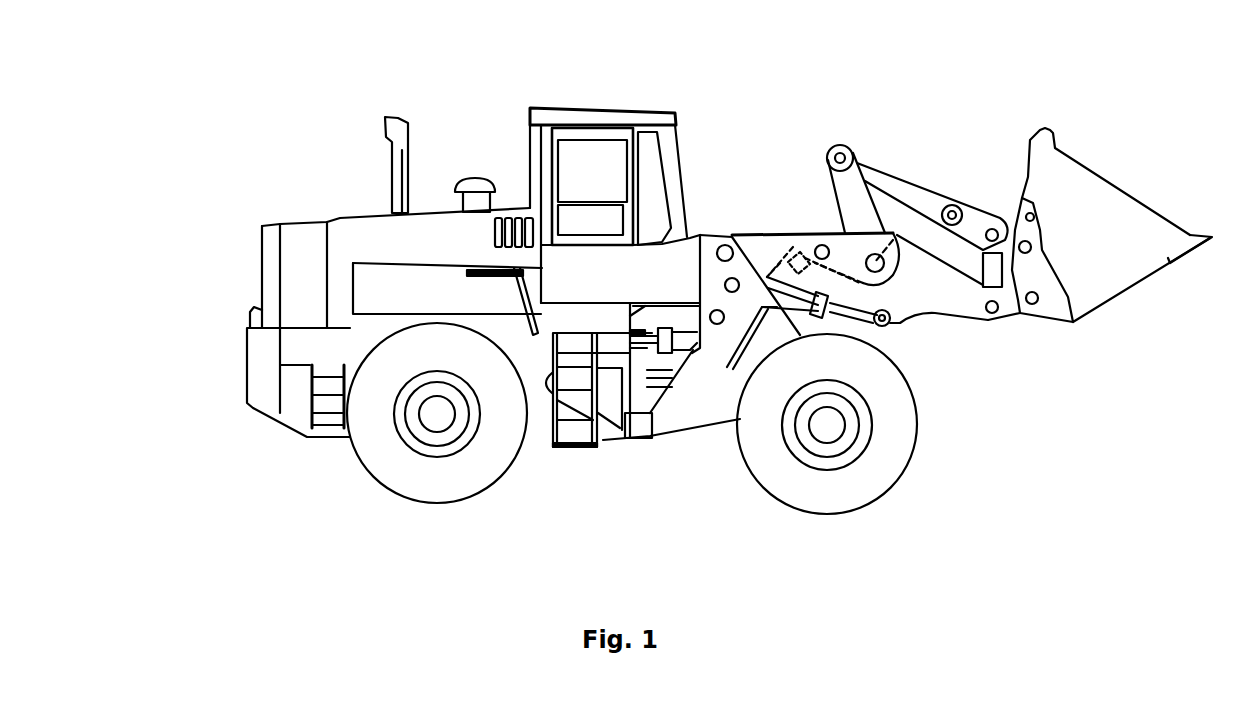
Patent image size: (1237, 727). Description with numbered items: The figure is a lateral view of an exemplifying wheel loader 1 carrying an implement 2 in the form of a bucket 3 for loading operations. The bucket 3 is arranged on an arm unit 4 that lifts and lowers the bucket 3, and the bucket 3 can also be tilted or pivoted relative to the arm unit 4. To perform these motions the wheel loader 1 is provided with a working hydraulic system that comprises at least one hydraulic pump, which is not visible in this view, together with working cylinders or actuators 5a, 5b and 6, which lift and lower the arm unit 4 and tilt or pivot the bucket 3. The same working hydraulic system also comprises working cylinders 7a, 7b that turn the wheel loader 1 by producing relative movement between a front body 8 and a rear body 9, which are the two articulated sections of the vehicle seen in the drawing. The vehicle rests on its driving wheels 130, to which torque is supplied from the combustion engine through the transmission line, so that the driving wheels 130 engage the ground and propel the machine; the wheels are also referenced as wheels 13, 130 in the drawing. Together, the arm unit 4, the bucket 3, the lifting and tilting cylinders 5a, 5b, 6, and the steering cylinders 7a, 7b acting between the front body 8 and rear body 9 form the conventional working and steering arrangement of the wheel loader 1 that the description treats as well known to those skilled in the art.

The wheel loader 1 is at (343, 71).
The implement 2 is at (983, 177).
The bucket 3 is at (1103, 262).
The arm unit 4 is at (972, 315).
The working cylinder 5a is at (868, 353).
The working cylinder 5b is at (852, 317).
The working cylinder 6 is at (790, 262).
The working cylinder 7a is at (792, 385).
The working cylinder 7b is at (700, 346).
The front body 8 is at (668, 430).
The rear body 9 is at (293, 403).
The wheel 13 is at (397, 431).
The driving wheels 130 is at (420, 417).